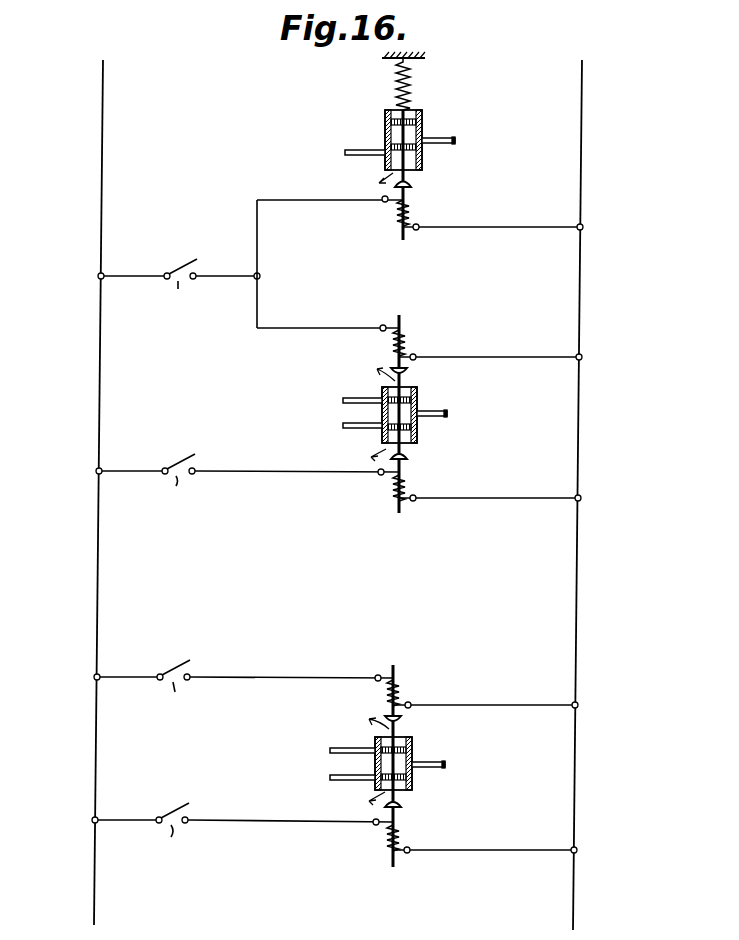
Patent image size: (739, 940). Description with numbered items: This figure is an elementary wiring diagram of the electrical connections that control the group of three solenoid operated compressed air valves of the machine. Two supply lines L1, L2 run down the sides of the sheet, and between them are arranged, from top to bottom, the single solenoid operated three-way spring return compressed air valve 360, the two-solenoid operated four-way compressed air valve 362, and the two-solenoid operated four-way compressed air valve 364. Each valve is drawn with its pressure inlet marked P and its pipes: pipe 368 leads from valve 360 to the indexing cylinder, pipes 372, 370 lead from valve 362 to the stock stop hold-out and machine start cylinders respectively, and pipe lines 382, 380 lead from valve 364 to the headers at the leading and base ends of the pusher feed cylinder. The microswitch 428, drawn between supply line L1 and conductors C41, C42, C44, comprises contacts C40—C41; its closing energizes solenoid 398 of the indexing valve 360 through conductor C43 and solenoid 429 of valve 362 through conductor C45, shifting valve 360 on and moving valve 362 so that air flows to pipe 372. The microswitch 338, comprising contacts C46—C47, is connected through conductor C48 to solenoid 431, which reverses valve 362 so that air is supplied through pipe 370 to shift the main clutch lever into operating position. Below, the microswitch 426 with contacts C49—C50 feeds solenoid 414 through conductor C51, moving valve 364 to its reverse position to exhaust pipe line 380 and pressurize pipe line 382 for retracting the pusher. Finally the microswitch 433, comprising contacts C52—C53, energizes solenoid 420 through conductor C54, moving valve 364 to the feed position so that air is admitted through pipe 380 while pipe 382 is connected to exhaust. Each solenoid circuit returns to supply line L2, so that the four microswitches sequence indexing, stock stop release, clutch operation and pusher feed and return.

The three-way compressed air valve 360 is at (420, 115).
The pipe 368 is at (356, 150).
The solenoid 398 is at (398, 222).
The microswitch 428 is at (173, 285).
The four-way compressed air valve 362 is at (417, 394).
The pipe 372 is at (358, 398).
The pipe line 370 is at (360, 428).
The solenoid 429 is at (405, 343).
The solenoid 431 is at (395, 492).
The microswitch 338 is at (175, 481).
The four-way compressed air valve 364 is at (412, 746).
The pipe line 382 is at (336, 748).
The pipe line 380 is at (336, 779).
The solenoid 414 is at (393, 690).
The solenoid 420 is at (385, 845).
The microswitch 426 is at (176, 690).
The microswitch 433 is at (168, 834).
The supply line L1 is at (85, 492).
The supply line L2 is at (592, 495).
The switch contact C40 is at (132, 271).
The switch contact C41 is at (228, 264).
The conductor C42 is at (330, 191).
The conductor C43 is at (493, 217).
The conductor C44 is at (328, 321).
The conductor C45 is at (490, 349).
The switch contact C46 is at (130, 464).
The switch contact C47 is at (297, 464).
The conductor C48 is at (490, 490).
The switch contact C49 is at (127, 670).
The switch contact C50 is at (291, 670).
The conductor C51 is at (485, 697).
The switch contact C52 is at (125, 813).
The switch contact C53 is at (290, 814).
The conductor C54 is at (485, 842).